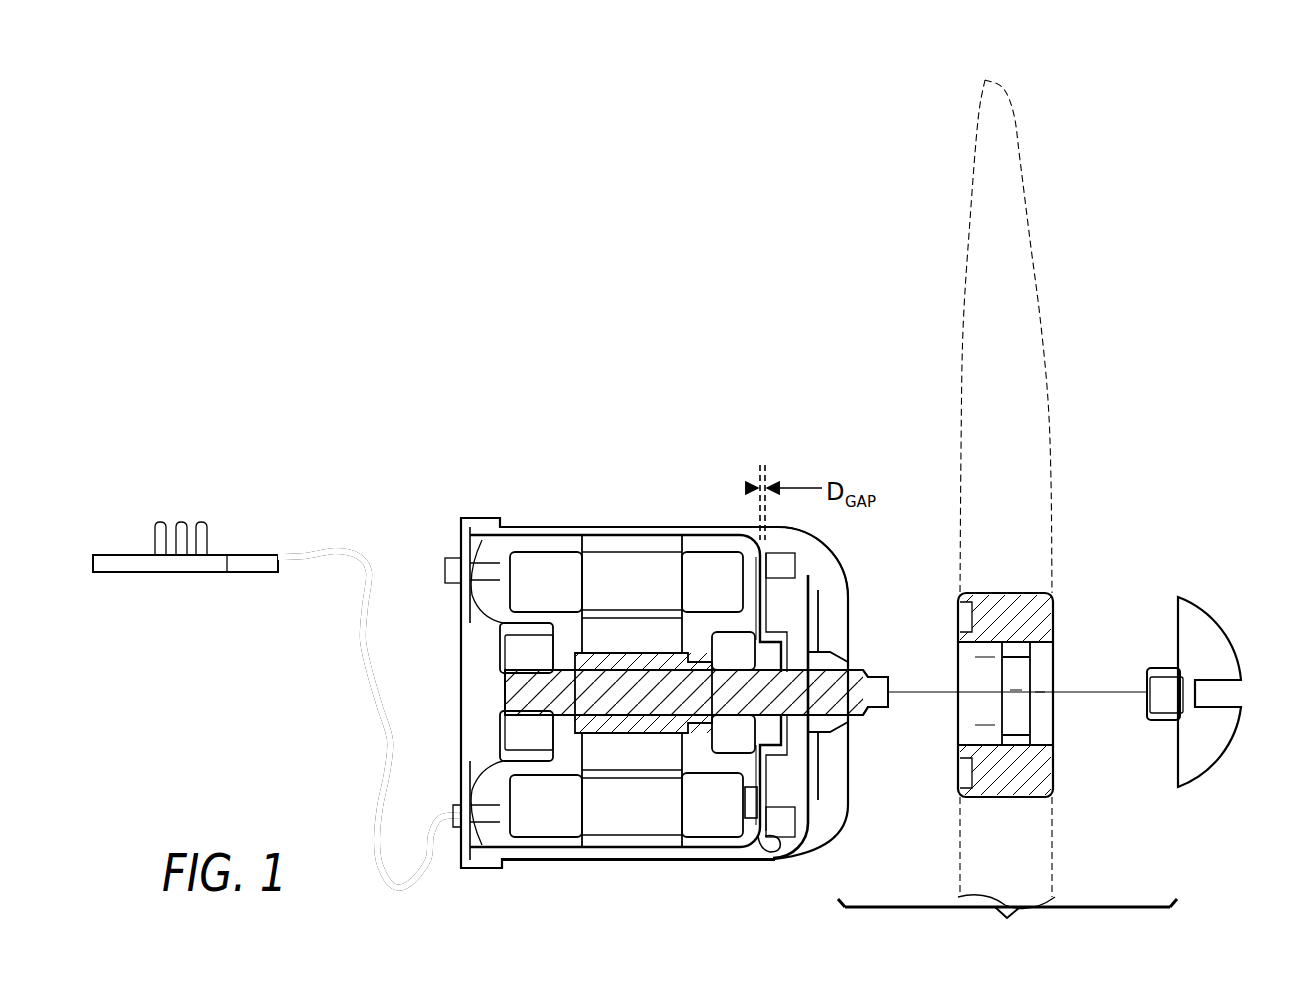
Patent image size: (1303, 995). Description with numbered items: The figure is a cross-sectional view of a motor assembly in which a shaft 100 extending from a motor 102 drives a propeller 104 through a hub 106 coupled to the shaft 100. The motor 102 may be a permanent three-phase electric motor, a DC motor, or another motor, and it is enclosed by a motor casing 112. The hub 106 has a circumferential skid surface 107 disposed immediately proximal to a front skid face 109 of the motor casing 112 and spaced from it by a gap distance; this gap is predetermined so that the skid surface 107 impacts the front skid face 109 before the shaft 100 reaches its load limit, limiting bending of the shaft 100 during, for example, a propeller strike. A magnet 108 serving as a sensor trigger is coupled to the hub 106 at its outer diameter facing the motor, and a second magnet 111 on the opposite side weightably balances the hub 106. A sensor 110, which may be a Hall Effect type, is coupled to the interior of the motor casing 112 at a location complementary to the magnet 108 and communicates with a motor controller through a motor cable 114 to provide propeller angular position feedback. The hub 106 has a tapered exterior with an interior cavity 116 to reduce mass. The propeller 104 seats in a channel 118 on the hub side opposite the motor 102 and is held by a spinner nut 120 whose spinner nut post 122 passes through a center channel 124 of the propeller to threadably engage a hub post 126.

The shaft 100 is at (855, 682).
The motor 102 is at (593, 524).
The propeller 104 is at (1050, 396).
The hub 106 is at (830, 555).
The circumferential skid surface 107 is at (760, 536).
The magnet 108 is at (782, 832).
The front skid face 109 is at (760, 540).
The sensor 110 is at (750, 802).
The second magnet 111 is at (786, 570).
The motor casing 112 is at (585, 862).
The motor cable 114 is at (293, 549).
The interior cavity 116 is at (790, 602).
The channel 118 is at (830, 783).
The spinner nut 120 is at (1220, 614).
The spinner nut post 122 is at (1162, 667).
The center channel 124 is at (1037, 705).
The hub post 126 is at (868, 712).